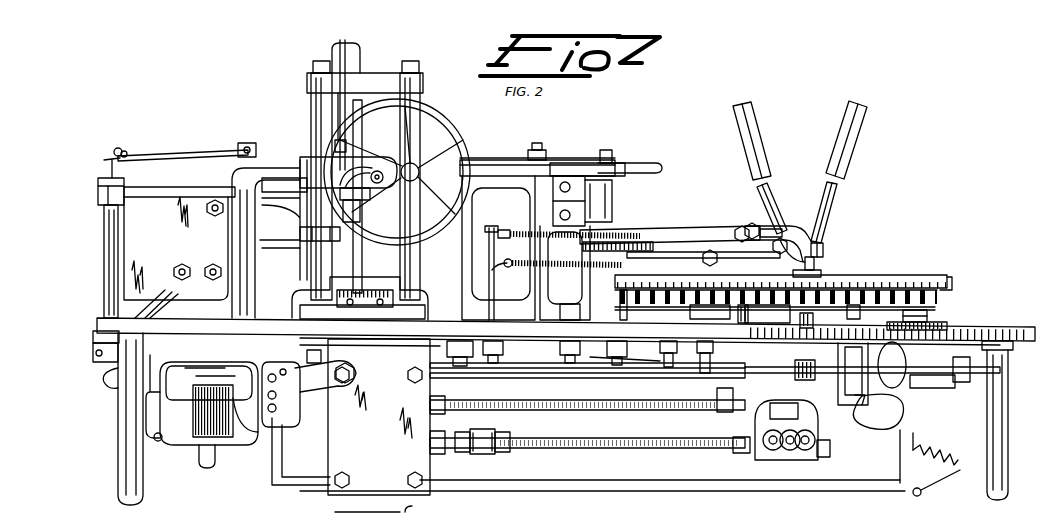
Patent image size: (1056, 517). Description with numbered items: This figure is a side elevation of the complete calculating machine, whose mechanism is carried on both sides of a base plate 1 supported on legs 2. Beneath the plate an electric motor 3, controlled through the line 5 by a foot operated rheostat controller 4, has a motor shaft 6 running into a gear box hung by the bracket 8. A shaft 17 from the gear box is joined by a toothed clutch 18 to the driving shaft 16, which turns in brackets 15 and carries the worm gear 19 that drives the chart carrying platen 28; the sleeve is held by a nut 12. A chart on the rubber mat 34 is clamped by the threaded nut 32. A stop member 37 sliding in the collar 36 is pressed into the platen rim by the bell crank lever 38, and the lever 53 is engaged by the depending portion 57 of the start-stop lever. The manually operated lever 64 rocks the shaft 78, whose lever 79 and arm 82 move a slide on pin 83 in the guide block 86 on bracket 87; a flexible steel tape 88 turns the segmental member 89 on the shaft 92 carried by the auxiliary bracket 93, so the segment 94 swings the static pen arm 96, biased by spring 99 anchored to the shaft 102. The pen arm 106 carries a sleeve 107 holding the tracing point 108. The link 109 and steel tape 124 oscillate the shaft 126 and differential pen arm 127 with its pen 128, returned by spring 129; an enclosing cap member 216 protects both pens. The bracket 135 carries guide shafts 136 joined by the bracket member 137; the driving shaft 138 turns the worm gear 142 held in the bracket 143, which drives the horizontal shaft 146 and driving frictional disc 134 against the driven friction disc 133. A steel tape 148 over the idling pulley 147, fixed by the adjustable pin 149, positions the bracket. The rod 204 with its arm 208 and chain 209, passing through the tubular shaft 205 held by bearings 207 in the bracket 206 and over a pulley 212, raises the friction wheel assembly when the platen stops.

The base plate 1 is at (97, 322).
The legs 2 is at (130, 442).
The electric motor 3 is at (182, 443).
The foot operated rheostat controller 4 is at (942, 451).
The line 5 is at (913, 433).
The motor shaft 6 is at (326, 408).
The bracket 8 is at (368, 417).
The nut 12 is at (738, 320).
The brackets 15 is at (740, 453).
The driving shaft 16 is at (692, 446).
The shaft 17 is at (440, 447).
The toothed clutch 18 is at (492, 451).
The worm gear 19 is at (775, 452).
The chart carrying platen 28 is at (880, 280).
The threaded nut 32 is at (385, 505).
The rubber mat 34 is at (90, 510).
The collar 36 is at (947, 323).
The stop member 37 is at (928, 312).
The bell crank lever 38 is at (935, 388).
The lever 53 is at (866, 319).
The depending portion 57 is at (838, 319).
The manually operated lever 64 is at (872, 441).
The shaft 78 is at (257, 292).
The lever 79 is at (250, 143).
The arm 82 is at (475, 158).
The pin 83 is at (540, 150).
The guide block 86 is at (500, 170).
The bracket 87 is at (542, 304).
The flexible steel tape 88 is at (582, 163).
The segmental member 89 is at (640, 164).
The shaft 92 is at (612, 190).
The auxiliary bracket 93 is at (592, 206).
The segment 94 is at (583, 247).
The static pen arm 96 is at (690, 231).
The spring 99 is at (525, 237).
The shaft 102 is at (486, 232).
The pen arm 106 is at (775, 230).
The sleeve 107 is at (823, 248).
The tracing point 108 is at (823, 270).
The link 109 is at (560, 376).
The steel tape 124 is at (515, 364).
The shaft 126 is at (632, 308).
The differential pen arm 127 is at (703, 260).
The pen 128 is at (772, 246).
The spring 129 is at (495, 270).
The driven friction disc 133 is at (400, 292).
The driving frictional disc 134 is at (437, 118).
The bracket 135 is at (422, 302).
The guide shafts 136 is at (315, 110).
The bracket member 137 is at (385, 87).
The driving shaft 138 is at (358, 100).
The worm gear 142 is at (312, 172).
The bracket 143 is at (300, 236).
The horizontal shaft 146 is at (340, 165).
The idling pulley 147 is at (340, 48).
The steel tape 148 is at (334, 65).
The adjustable pin 149 is at (335, 145).
The rod 204 is at (185, 148).
The tubular shaft 205 is at (104, 218).
The bracket 206 is at (130, 240).
The bearings 207 is at (98, 192).
The arm 208 is at (122, 149).
The chain 209 is at (104, 161).
The pulley 212 is at (106, 374).
The enclosing cap member 216 is at (850, 118).